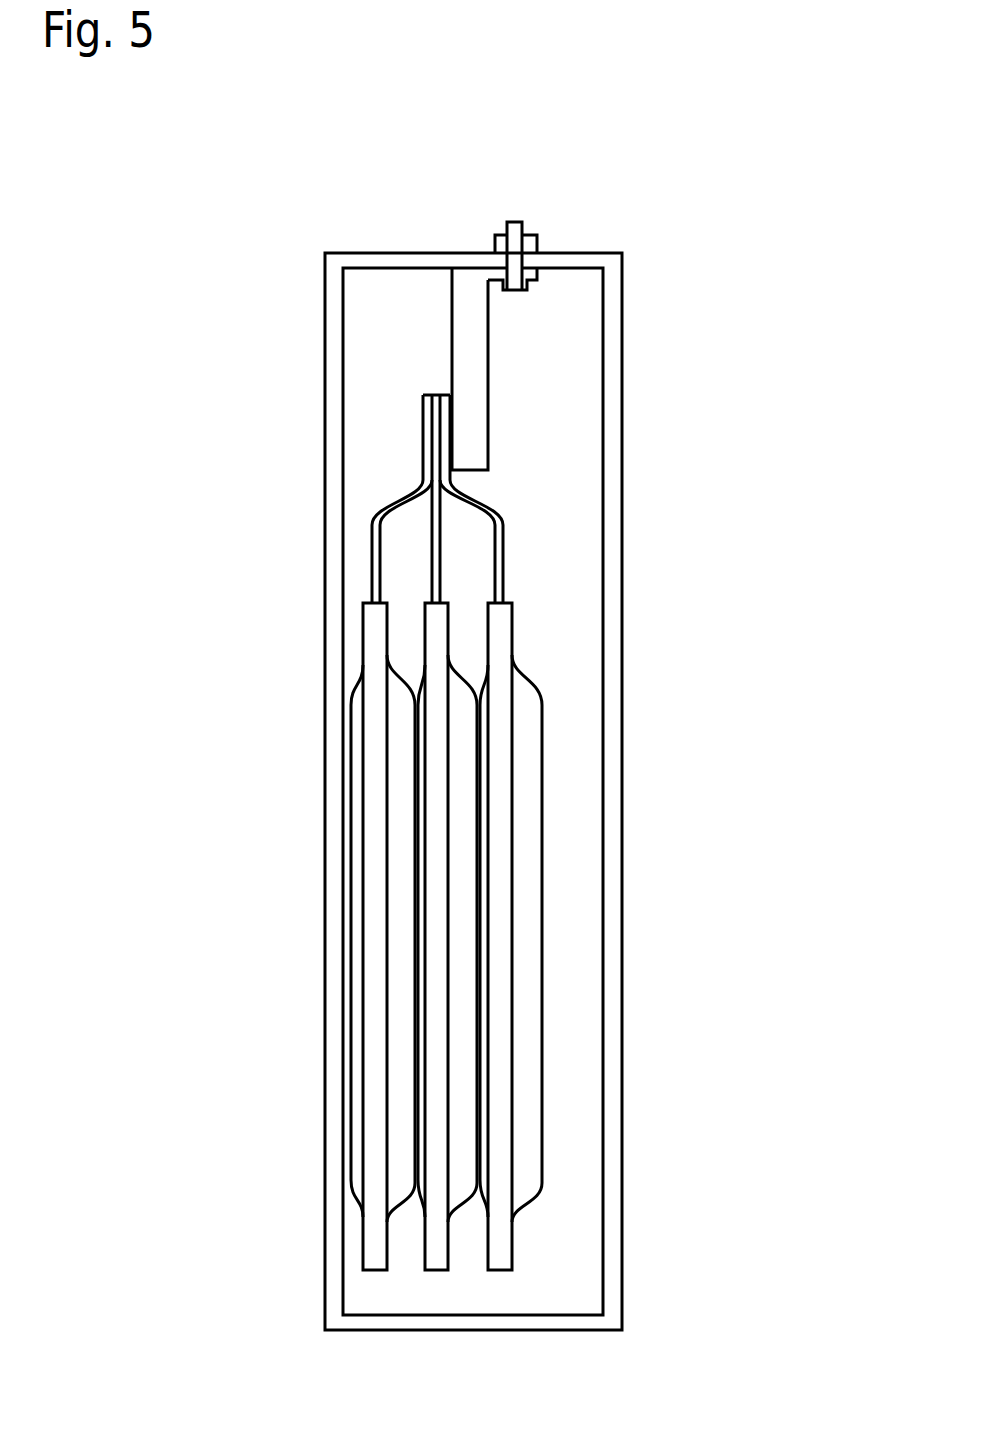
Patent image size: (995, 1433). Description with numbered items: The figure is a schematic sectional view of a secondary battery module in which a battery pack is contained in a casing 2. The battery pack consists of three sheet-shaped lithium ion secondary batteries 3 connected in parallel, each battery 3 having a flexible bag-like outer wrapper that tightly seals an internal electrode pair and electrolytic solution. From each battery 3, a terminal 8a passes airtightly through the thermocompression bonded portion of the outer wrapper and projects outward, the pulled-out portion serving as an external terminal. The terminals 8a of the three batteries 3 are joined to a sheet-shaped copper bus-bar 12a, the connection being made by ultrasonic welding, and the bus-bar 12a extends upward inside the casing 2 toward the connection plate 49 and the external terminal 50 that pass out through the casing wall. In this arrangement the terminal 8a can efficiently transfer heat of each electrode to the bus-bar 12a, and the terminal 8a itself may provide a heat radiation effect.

The casing 2 is at (623, 863).
The sheet-shaped lithium ion secondary battery 3 is at (536, 673).
The negative electrode terminal 8a is at (378, 568).
The bus-bar 12a is at (473, 388).
The terminal connection plate 49 is at (517, 290).
The external terminal 50 is at (529, 236).